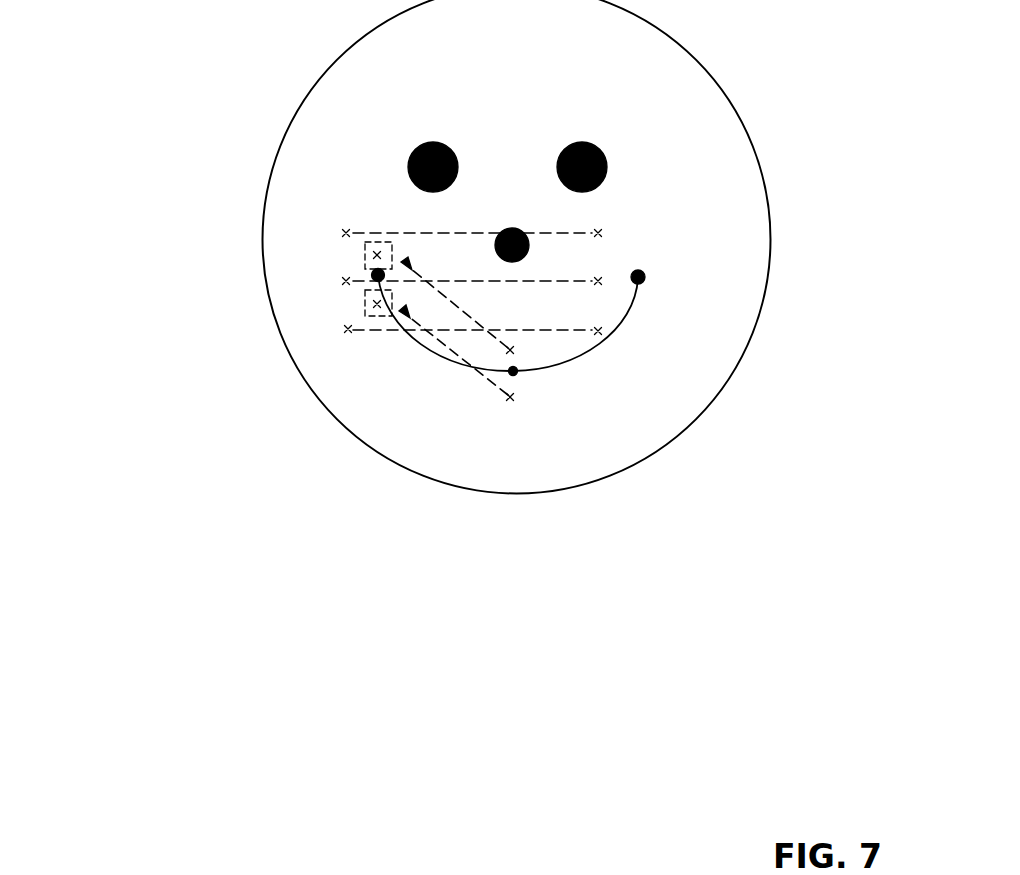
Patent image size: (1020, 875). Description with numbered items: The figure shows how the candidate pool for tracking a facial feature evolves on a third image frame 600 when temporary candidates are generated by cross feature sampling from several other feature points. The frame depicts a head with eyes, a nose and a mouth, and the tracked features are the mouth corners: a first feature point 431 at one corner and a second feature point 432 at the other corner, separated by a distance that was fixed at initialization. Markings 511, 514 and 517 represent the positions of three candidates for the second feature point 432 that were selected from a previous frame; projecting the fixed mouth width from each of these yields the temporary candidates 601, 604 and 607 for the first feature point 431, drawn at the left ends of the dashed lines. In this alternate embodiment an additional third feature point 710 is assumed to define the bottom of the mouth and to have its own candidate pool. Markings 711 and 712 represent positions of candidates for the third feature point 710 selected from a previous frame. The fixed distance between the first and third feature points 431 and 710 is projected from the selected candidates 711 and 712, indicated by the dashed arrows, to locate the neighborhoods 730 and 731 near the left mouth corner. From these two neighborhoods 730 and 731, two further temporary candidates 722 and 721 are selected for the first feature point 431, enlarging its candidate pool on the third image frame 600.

The third image frame 600 is at (72, 224).
The temporary candidate 601 is at (346, 233).
The temporary candidate 604 is at (346, 281).
The temporary candidate 607 is at (348, 329).
The marking 511 is at (598, 233).
The marking 514 is at (598, 281).
The marking 517 is at (598, 331).
The first feature point 431 is at (373, 273).
The second feature point 432 is at (645, 277).
The third feature point 710 is at (511, 373).
The marking 711 is at (513, 397).
The marking 712 is at (513, 350).
The temporary candidate 721 is at (377, 310).
The temporary candidate 722 is at (381, 255).
The neighborhood 730 is at (386, 242).
The neighborhood 731 is at (375, 317).